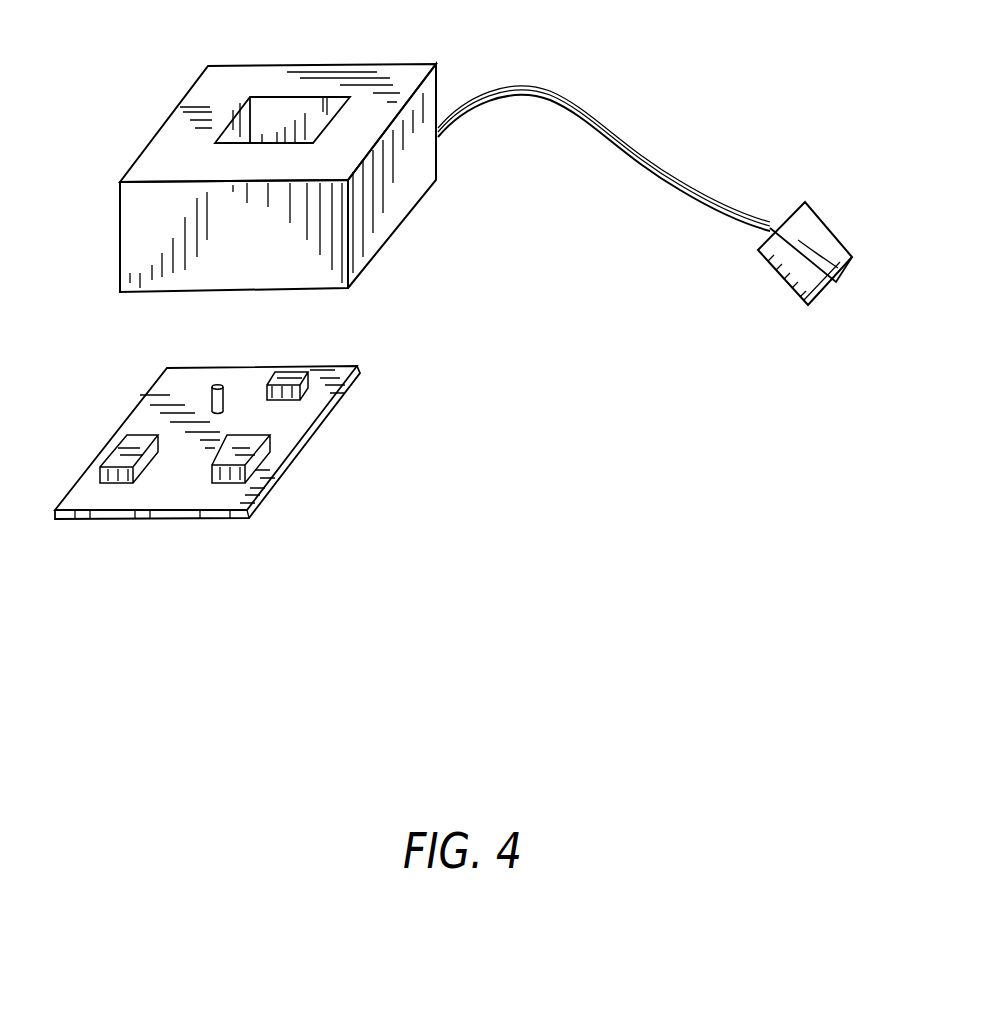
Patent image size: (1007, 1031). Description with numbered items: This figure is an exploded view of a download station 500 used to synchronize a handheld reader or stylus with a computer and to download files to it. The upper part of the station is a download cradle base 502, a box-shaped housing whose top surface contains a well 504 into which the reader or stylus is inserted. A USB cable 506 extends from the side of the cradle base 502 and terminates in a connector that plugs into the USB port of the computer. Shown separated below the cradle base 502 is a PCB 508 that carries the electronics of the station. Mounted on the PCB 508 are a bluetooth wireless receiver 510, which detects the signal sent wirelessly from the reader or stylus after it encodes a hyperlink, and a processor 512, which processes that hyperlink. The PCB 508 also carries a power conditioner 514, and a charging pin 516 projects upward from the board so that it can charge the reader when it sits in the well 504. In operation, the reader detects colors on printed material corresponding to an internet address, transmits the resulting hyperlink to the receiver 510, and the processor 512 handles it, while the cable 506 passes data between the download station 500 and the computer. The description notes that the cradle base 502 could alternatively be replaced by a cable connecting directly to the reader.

The download station 500 is at (188, 32).
The download cradle base 502 is at (333, 290).
The well 504 is at (310, 105).
The USB cable 506 is at (653, 173).
The PCB 508 is at (182, 397).
The bluetooth wireless receiver 510 is at (310, 390).
The processor 512 is at (230, 478).
The power conditioner 514 is at (113, 475).
The charging pin 516 is at (220, 387).